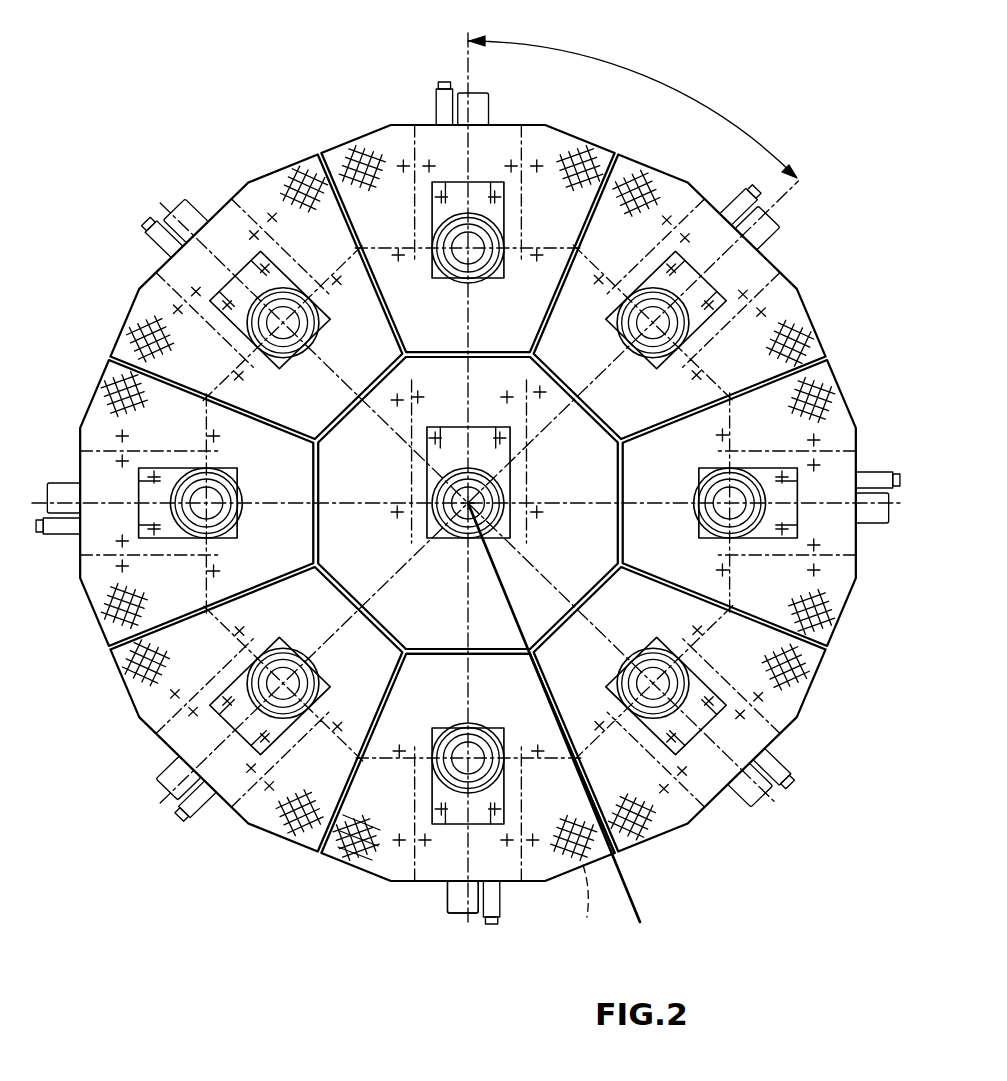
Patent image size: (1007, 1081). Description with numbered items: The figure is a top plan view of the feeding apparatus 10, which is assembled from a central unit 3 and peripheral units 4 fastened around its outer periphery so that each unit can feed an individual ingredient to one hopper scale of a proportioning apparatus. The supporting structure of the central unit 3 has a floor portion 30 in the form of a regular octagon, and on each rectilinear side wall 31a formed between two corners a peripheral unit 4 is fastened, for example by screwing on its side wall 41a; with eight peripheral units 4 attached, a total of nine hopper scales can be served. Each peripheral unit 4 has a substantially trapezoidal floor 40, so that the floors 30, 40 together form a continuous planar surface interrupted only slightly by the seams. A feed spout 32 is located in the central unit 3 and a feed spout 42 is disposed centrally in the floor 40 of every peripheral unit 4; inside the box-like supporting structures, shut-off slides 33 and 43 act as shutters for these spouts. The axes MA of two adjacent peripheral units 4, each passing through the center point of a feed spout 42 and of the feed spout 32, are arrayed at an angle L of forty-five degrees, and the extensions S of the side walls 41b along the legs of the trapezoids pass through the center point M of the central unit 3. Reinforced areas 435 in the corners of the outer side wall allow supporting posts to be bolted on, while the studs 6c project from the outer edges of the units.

The apparatus 10 is at (257, 150).
The peripheral unit 4 is at (468, 514).
The central unit 3 is at (600, 557).
The floor portion 30 is at (495, 468).
The side wall 31a is at (435, 643).
The feed spout 32 is at (474, 490).
The shut-off slide 33 is at (447, 450).
The floor 40 is at (383, 853).
The side wall 41a is at (447, 652).
The side wall 41b is at (574, 762).
The feed spout 42 is at (472, 740).
The shut-off slide 43 is at (428, 787).
The clamping stud 6c is at (447, 910).
The reinforced area 435 is at (592, 906).
The center point M is at (468, 503).
The axis MA is at (462, 52).
The angular pitch L is at (677, 93).
The extension S is at (622, 900).